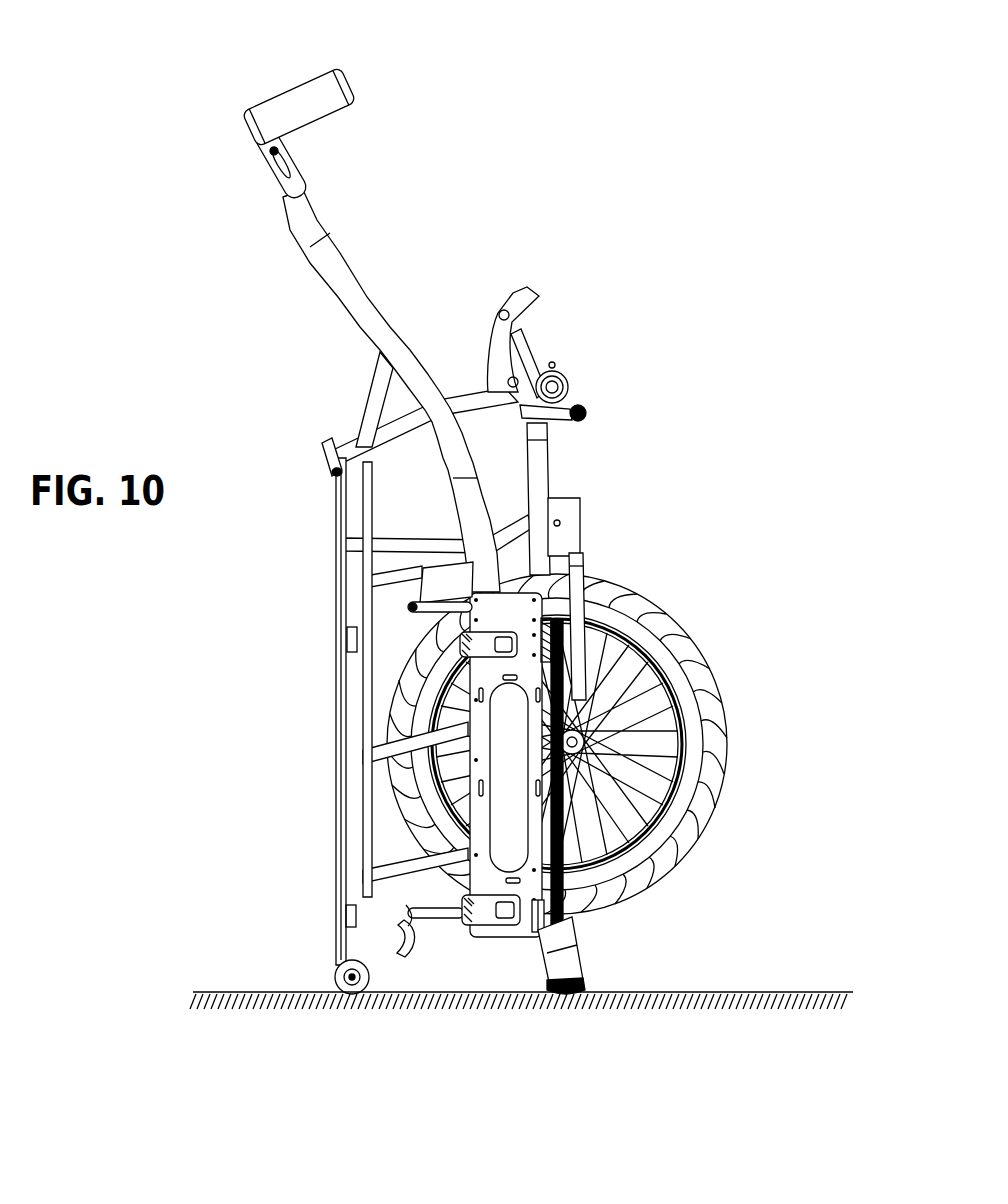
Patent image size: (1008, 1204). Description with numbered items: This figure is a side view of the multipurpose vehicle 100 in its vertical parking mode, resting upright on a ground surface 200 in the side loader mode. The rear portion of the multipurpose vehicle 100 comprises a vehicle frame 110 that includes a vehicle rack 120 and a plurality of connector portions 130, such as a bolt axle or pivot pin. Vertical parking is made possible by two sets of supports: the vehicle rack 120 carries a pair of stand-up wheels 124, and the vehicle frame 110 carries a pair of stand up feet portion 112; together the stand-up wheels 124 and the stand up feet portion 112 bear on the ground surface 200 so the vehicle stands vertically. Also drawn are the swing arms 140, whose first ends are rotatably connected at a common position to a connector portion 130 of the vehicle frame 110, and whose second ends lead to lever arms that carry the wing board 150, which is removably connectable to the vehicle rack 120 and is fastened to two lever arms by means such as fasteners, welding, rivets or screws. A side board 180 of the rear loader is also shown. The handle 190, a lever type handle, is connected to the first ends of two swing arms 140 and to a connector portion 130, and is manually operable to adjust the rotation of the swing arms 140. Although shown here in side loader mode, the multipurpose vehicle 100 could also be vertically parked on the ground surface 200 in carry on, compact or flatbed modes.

The multipurpose vehicle 100 is at (637, 231).
The vehicle frame 110 is at (368, 313).
The stand up feet portion 112 is at (567, 968).
The vehicle rack 120 is at (340, 770).
The stand-up wheels 124 is at (343, 968).
The connector portion 130 is at (417, 597).
The swing arm 140 is at (430, 912).
The wing board 150 is at (537, 923).
The side board 180 is at (517, 730).
The handle 190 is at (413, 928).
The ground surface 200 is at (647, 997).